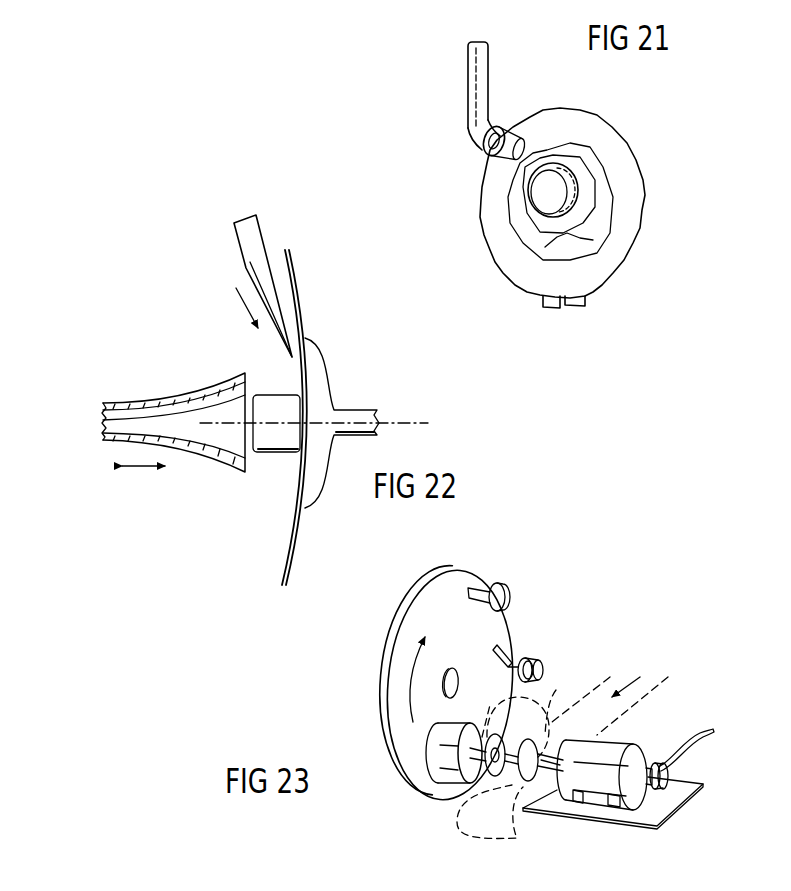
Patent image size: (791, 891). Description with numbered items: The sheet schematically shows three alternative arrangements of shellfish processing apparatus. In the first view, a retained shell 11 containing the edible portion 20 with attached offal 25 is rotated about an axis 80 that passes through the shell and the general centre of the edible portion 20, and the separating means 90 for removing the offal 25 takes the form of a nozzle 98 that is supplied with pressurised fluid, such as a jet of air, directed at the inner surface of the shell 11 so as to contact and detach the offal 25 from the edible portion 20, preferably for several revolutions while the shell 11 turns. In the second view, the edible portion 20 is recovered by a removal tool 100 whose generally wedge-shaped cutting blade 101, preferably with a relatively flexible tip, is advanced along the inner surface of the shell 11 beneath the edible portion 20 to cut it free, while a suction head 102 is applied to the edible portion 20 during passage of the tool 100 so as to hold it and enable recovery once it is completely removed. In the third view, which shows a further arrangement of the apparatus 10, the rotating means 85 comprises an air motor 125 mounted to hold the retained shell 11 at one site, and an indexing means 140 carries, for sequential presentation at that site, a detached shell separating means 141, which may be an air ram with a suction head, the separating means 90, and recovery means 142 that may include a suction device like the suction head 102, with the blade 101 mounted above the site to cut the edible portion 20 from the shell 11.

In FIG. 23, the saw chain tool 10 is at (556, 690).
In FIG. 21, the retained shell 11 is at (598, 266).
In FIG. 22, the retained shell 11 is at (297, 283).
In FIG. 21, the edible portion 20 is at (553, 190).
In FIG. 22, the edible portion 20 is at (278, 436).
In FIG. 21, the offal 25 is at (582, 225).
In FIG. 22, the axis 80 is at (405, 422).
In FIG. 23, the rotating means 85 is at (634, 727).
In FIG. 21, the separating means 90 is at (494, 58).
In FIG. 23, the separating means 90 is at (516, 655).
In FIG. 21, the nozzle 98 is at (490, 162).
In FIG. 22, the removal tool 100 is at (243, 265).
In FIG. 22, the cutting blade 101 is at (255, 250).
In FIG. 22, the suction head 102 is at (213, 385).
In FIG. 23, the air motor 125 is at (600, 778).
In FIG. 23, the indexing means 140 is at (410, 601).
In FIG. 23, the separating means 141 is at (437, 757).
In FIG. 23, the recovery means 142 is at (506, 573).